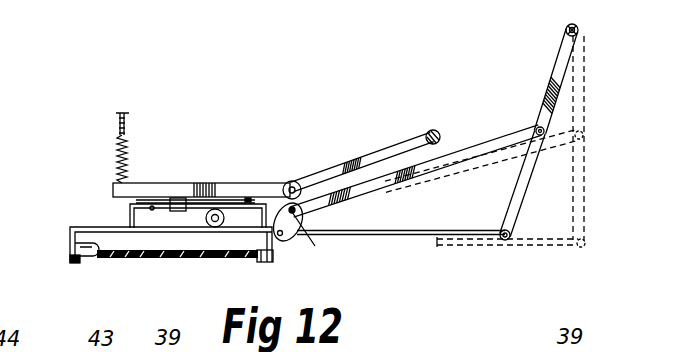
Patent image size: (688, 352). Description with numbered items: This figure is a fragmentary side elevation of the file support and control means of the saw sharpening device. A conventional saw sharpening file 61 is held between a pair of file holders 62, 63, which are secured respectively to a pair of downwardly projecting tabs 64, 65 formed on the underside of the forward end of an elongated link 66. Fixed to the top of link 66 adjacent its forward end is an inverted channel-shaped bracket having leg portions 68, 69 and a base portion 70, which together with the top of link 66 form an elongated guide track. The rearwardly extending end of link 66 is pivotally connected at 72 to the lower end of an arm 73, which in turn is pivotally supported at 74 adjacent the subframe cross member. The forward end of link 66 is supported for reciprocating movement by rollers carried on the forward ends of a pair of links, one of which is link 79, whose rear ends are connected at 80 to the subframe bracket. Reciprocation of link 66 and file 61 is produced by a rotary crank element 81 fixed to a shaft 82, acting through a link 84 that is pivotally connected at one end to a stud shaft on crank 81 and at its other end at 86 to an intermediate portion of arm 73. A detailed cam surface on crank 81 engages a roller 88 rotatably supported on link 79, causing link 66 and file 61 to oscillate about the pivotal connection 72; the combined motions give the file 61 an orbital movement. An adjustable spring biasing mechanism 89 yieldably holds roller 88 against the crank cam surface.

The saw sharpening file 61 is at (183, 259).
The file holder 62 is at (88, 263).
The file holder 63 is at (270, 268).
The downwardly projecting tab 64 is at (72, 244).
The downwardly projecting tab 65 is at (274, 252).
The elongated link 66 is at (517, 248).
The leg portion 68 is at (130, 217).
The leg portion 69 is at (273, 184).
The base portion 70 is at (152, 206).
The pivotal connection 72 is at (580, 241).
The arm 73 is at (570, 92).
The pivotal support 74 is at (580, 32).
The link 79 is at (362, 163).
The connection 80 is at (439, 138).
The rotary crank element 81 is at (302, 232).
The shaft 82 is at (296, 222).
The link 84 is at (513, 158).
The pivotal connection 86 is at (581, 132).
The roller 88 is at (296, 184).
The adjustable spring biasing mechanism 89 is at (116, 157).